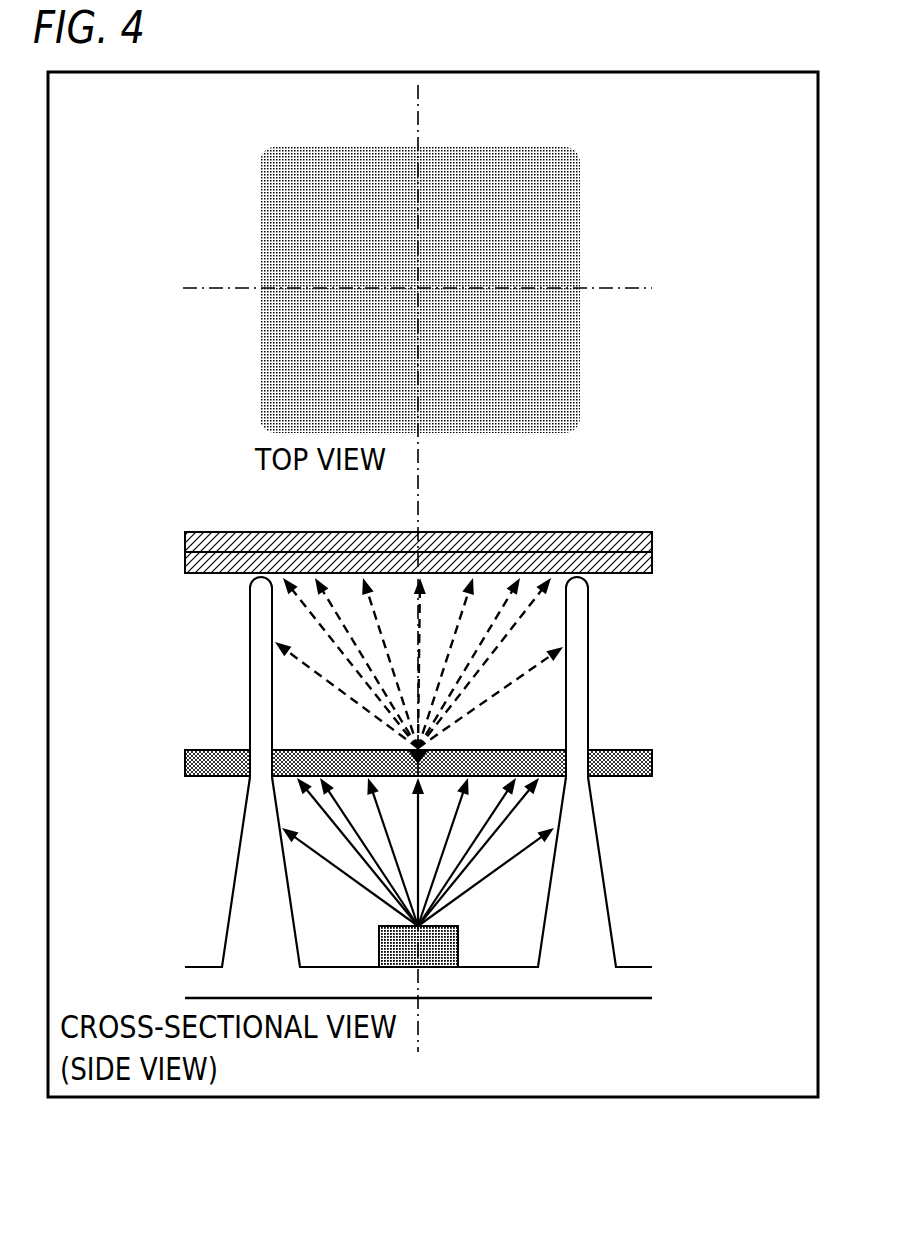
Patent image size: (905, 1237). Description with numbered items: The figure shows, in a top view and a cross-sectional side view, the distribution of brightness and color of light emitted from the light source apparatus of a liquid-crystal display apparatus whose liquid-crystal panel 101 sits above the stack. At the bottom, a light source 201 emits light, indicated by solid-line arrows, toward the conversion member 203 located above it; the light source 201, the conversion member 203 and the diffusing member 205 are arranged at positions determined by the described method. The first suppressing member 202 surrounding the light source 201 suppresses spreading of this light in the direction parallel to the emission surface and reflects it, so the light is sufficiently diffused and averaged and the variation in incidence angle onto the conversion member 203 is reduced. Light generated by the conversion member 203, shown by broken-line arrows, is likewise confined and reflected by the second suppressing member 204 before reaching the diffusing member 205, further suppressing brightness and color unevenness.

The liquid-crystal panel 101 is at (196, 536).
The light source 201 is at (459, 935).
The first suppressing member 202 is at (577, 948).
The conversion member 203 is at (655, 763).
The second suppressing member 204 is at (250, 680).
The diffusing member 205 is at (655, 562).